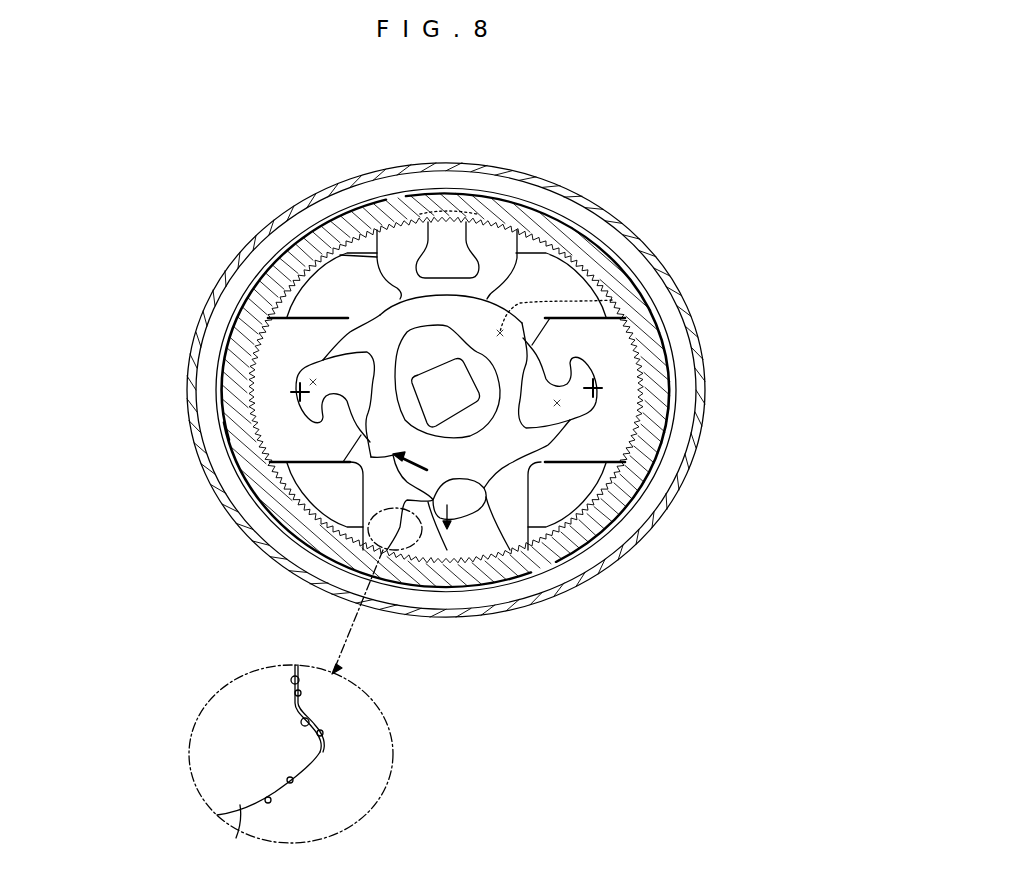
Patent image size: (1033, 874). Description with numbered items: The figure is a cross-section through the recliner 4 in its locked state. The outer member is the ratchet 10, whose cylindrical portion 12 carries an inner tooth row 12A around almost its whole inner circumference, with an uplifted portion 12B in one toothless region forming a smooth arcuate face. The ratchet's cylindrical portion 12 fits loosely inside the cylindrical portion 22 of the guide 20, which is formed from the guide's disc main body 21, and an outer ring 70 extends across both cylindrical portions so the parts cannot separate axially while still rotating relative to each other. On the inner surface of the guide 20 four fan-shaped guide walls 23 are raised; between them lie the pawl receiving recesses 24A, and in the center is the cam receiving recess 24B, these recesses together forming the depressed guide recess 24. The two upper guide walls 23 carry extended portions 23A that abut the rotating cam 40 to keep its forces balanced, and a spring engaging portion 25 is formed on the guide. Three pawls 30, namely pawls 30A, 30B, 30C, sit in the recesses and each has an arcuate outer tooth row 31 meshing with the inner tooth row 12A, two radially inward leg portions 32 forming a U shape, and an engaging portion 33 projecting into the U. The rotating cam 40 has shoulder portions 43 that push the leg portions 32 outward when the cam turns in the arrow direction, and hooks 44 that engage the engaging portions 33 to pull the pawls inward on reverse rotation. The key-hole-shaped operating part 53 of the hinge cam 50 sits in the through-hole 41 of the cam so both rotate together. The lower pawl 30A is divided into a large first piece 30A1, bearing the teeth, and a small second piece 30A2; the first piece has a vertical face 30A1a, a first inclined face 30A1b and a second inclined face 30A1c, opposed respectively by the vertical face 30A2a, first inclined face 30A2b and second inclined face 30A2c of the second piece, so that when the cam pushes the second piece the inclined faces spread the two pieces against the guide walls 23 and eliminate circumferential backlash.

The recliner 4 is at (627, 144).
The outer ring 70 is at (240, 251).
The cylindrical portion 12 is at (628, 555).
The ratchet 10 is at (630, 556).
The inner tooth row 12A is at (657, 453).
The uplifted portion 12B is at (580, 267).
The pawls 30 is at (443, 426).
The pawl 30A is at (377, 504).
The pawl 30B is at (537, 377).
The pawl 30C is at (304, 320).
The guide 20 is at (640, 535).
The cylindrical portion 22 is at (565, 600).
The guide walls 23 is at (327, 280).
The extended portions 23A is at (407, 295).
The disc main body 21 is at (399, 232).
The spring engaging portion 25 is at (447, 245).
The guide recess 24 is at (444, 475).
The pawl receiving recesses 24A is at (313, 382).
The cam receiving recess 24B is at (612, 300).
The outer tooth row 31 is at (293, 450).
The leg portions 32 is at (262, 312).
The engaging portion 33 is at (293, 411).
The rotating cam 40 is at (343, 248).
The shoulder portions 43 is at (353, 332).
The hooks 44 is at (293, 357).
The hinge cam 50 is at (411, 408).
The operating part 53 is at (422, 324).
The through-hole 41 is at (497, 398).
The first piece 30A1 is at (463, 563).
The vertical face 30A1a is at (322, 700).
The first inclined face 30A1b is at (330, 724).
The second inclined face 30A1c is at (292, 782).
The second piece 30A2 is at (385, 535).
The vertical face 30A2a is at (295, 703).
The first inclined face 30A2b is at (312, 737).
The second inclined face 30A2c is at (268, 800).